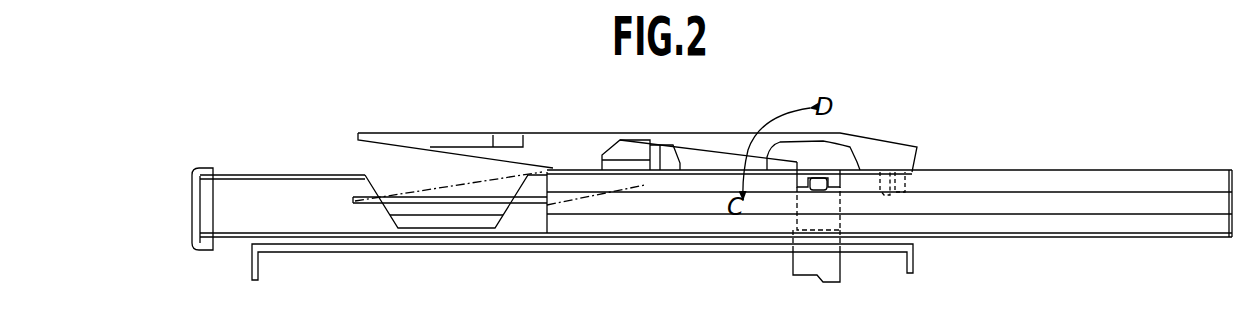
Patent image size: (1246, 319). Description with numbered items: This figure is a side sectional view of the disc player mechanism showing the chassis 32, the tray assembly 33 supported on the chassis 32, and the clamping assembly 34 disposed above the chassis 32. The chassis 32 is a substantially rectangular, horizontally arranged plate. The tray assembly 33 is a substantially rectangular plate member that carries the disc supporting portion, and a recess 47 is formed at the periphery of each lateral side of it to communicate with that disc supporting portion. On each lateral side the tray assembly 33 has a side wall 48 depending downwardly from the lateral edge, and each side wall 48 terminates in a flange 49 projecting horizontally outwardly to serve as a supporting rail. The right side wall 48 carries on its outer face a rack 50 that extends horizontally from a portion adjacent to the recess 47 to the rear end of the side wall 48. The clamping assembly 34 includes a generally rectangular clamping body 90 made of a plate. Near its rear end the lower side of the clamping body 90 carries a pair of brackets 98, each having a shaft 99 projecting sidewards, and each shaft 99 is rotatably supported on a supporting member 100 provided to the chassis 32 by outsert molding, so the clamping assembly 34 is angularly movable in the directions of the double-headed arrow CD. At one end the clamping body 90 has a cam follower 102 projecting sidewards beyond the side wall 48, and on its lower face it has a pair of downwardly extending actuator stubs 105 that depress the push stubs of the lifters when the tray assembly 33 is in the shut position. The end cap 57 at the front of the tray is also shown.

The chassis 32 is at (482, 250).
The tray assembly 33 is at (258, 173).
The clamping assembly 34 is at (728, 129).
The recess 47 is at (416, 226).
The side wall 48 is at (1117, 172).
The flange 49 is at (1112, 228).
The rack 50 is at (1035, 207).
The end cap 57 is at (190, 197).
The clamping body 90 is at (683, 132).
The bracket 98 is at (790, 172).
The shaft 99 is at (820, 192).
The supporting member 100 is at (790, 277).
The cam follower 102 is at (473, 138).
The actuator stub 105 is at (653, 162).